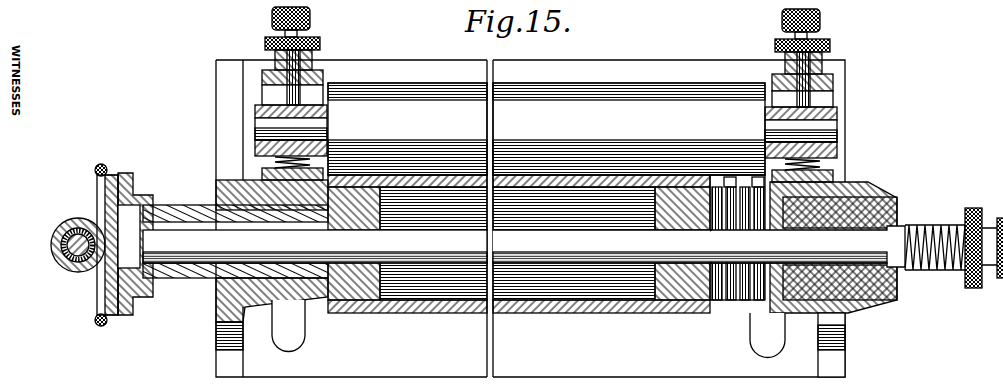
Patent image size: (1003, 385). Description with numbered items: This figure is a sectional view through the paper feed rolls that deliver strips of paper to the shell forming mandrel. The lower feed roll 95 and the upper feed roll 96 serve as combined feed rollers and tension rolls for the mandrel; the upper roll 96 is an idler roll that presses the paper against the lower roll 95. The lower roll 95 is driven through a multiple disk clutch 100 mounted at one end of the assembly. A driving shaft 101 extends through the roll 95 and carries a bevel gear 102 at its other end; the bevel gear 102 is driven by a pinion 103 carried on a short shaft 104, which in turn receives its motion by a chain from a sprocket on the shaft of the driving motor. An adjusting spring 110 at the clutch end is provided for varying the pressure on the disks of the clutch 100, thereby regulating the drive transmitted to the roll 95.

The upper feed roll 96 is at (596, 97).
The lower feed roll 95 is at (580, 306).
The multiple disk clutch 100 is at (730, 306).
The driving shaft 101 is at (195, 255).
The bevel gear 102 is at (95, 290).
The pinion 103 is at (70, 267).
The short shaft 104 is at (50, 241).
The adjusting spring 110 is at (946, 266).